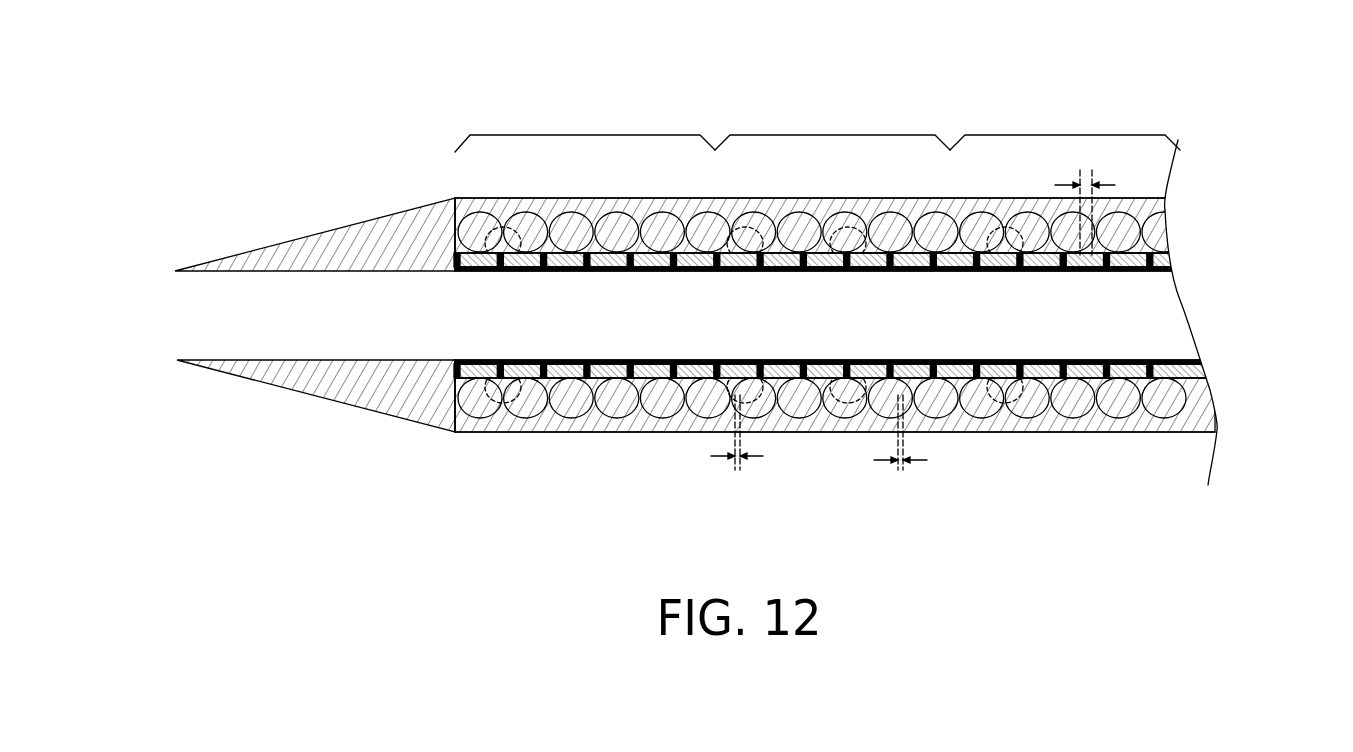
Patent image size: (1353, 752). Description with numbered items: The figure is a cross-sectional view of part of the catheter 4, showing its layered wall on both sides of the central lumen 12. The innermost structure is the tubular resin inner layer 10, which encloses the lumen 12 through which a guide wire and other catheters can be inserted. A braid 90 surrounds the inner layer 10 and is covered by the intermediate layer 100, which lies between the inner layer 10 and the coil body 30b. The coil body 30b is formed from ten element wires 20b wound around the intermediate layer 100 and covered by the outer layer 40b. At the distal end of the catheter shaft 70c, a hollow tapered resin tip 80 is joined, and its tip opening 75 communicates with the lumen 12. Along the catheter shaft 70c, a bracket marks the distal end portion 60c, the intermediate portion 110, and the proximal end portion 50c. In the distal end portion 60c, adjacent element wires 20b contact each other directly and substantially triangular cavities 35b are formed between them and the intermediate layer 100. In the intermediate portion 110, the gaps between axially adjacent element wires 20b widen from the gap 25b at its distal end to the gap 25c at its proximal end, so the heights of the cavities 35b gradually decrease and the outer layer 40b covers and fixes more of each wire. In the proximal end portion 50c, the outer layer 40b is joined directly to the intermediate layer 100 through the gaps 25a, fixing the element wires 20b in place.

The catheter 4 is at (769, 66).
The inner layer 10 is at (867, 233).
The lumen 12 is at (890, 429).
The element wires 20b is at (1160, 231).
The gap 25a is at (1085, 197).
The gap 25b is at (737, 448).
The gap 25c is at (900, 448).
The coil body 30b is at (1135, 382).
The cavities 35b is at (637, 272).
The outer layer 40b is at (1140, 200).
The proximal end portion 50c is at (1048, 135).
The distal end portion 60c is at (591, 135).
The catheter shaft 70c is at (493, 198).
The tip opening 75 is at (188, 317).
The tip 80 is at (363, 235).
The braid 90 is at (1092, 378).
The intermediate layer 100 is at (1165, 260).
The intermediate portion 110 is at (818, 135).